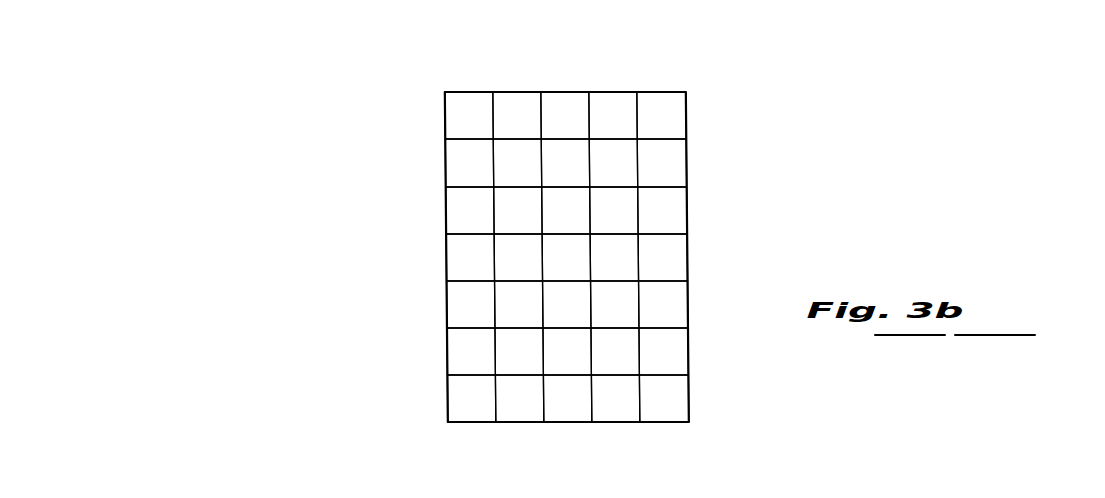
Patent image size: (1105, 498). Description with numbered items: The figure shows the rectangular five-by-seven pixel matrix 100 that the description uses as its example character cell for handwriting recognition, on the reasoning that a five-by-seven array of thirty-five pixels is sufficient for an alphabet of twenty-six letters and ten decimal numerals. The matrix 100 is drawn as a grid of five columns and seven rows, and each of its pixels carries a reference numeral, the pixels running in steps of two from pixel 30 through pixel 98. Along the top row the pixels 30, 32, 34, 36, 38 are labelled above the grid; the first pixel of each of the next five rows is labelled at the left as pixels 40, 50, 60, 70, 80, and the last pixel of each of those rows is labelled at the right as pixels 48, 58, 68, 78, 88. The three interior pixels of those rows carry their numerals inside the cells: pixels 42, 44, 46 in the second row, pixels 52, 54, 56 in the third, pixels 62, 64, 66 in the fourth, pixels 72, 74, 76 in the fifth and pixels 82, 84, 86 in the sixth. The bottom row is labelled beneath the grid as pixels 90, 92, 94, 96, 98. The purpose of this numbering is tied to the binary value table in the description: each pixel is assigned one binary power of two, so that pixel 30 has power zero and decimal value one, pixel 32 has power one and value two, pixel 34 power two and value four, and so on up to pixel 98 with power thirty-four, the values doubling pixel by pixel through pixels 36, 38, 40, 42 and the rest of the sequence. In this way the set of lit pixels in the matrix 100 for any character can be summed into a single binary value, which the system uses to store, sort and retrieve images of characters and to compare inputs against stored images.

The pixel 30 is at (458, 97).
The pixel 32 is at (505, 97).
The pixel 34 is at (553, 97).
The pixel 36 is at (600, 97).
The pixel 38 is at (648, 97).
The pixel 40 is at (449, 167).
The pixel 42 is at (517, 163).
The pixel 44 is at (565, 163).
The pixel 46 is at (613, 163).
The pixel 48 is at (687, 166).
The pixel 50 is at (449, 214).
The pixel 52 is at (518, 210).
The pixel 54 is at (566, 210).
The pixel 56 is at (614, 210).
The pixel 58 is at (687, 213).
The pixel 60 is at (449, 261).
The pixel 62 is at (518, 257).
The pixel 64 is at (566, 257).
The pixel 66 is at (614, 257).
The pixel 68 is at (687, 260).
The pixel 70 is at (449, 308).
The pixel 72 is at (519, 304).
The pixel 74 is at (567, 304).
The pixel 76 is at (615, 304).
The pixel 78 is at (687, 307).
The pixel 80 is at (449, 355).
The pixel 82 is at (519, 351).
The pixel 84 is at (567, 351).
The pixel 86 is at (615, 351).
The pixel 88 is at (687, 354).
The pixel 90 is at (477, 416).
The pixel 92 is at (524, 416).
The pixel 94 is at (570, 416).
The pixel 96 is at (618, 416).
The pixel 98 is at (665, 416).
The 5 by 7 matrix 100 is at (712, 111).